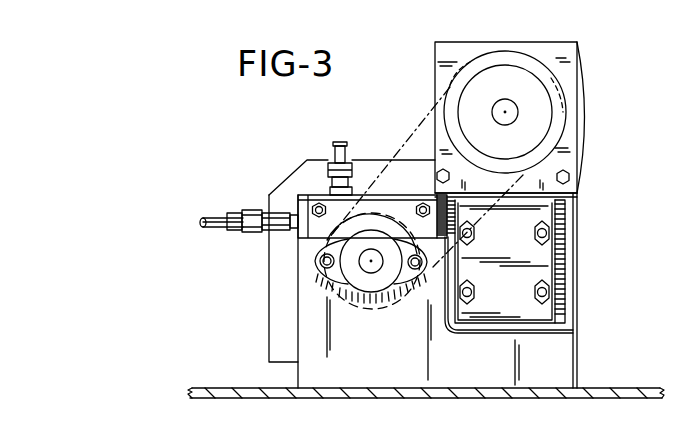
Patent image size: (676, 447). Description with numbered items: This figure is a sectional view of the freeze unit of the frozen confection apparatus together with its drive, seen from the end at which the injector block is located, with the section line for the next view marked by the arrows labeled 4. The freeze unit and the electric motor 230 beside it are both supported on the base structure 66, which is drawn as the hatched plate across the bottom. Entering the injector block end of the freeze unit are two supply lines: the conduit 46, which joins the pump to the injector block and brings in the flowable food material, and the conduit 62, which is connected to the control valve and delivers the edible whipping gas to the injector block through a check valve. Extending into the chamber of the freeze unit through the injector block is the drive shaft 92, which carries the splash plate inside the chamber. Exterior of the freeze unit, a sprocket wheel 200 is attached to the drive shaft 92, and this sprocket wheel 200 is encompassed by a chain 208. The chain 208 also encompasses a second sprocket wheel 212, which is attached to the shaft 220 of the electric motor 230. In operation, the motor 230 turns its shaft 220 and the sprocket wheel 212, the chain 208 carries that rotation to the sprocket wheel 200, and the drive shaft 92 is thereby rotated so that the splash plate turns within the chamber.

The section line 4- 4 is at (372, 158).
The conduit 46 is at (333, 148).
The conduit 62 is at (213, 218).
The base structure 66 is at (605, 388).
The drive shaft 92 is at (363, 263).
The sprocket wheel 200 is at (353, 315).
The chain 208 is at (413, 130).
The sprocket wheel 212 is at (563, 102).
The shaft 220 is at (520, 112).
The electric motor 230 is at (567, 52).